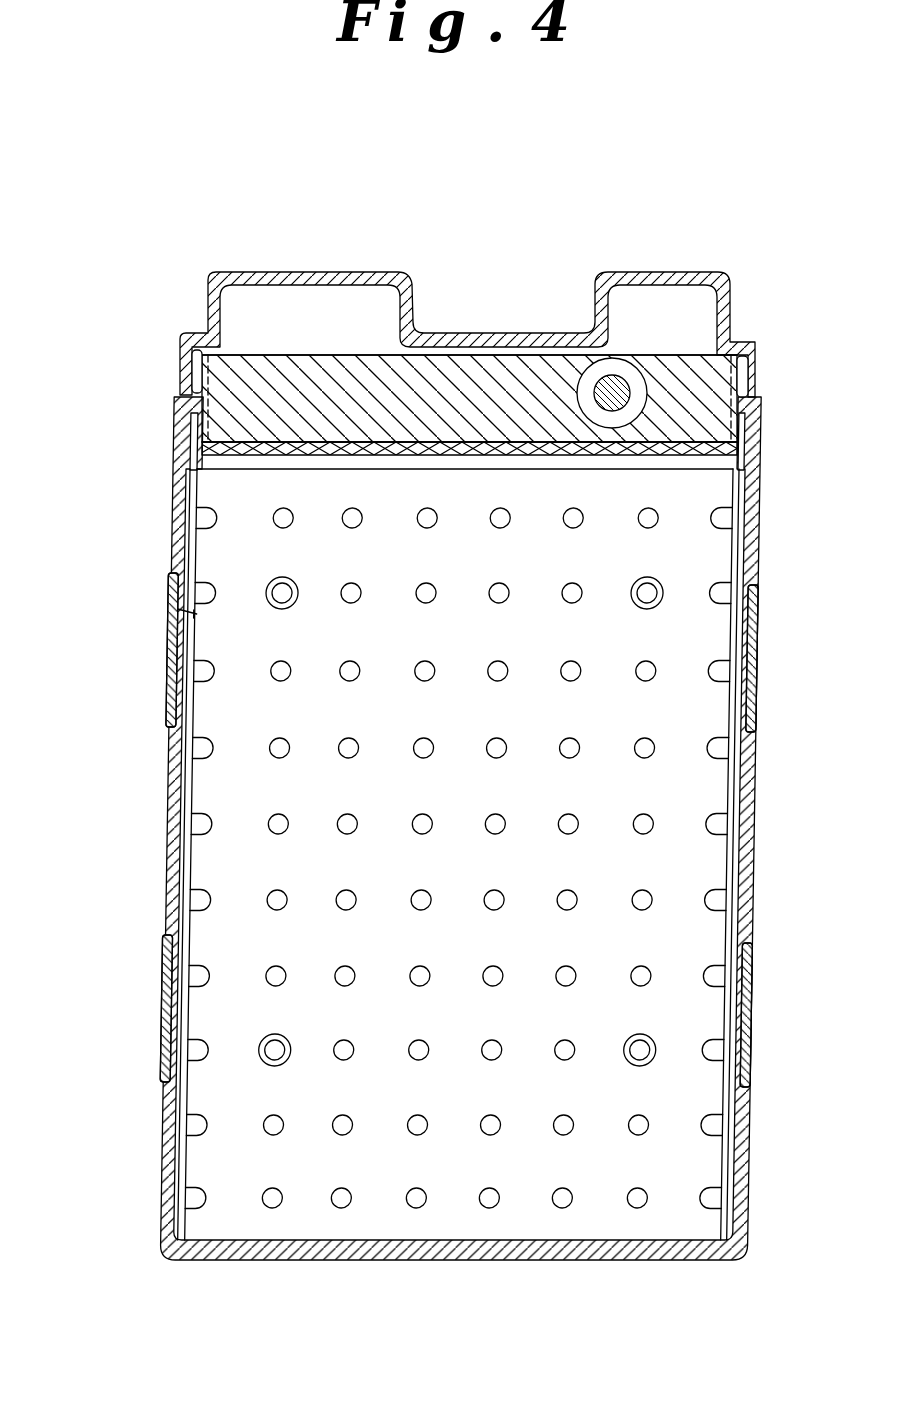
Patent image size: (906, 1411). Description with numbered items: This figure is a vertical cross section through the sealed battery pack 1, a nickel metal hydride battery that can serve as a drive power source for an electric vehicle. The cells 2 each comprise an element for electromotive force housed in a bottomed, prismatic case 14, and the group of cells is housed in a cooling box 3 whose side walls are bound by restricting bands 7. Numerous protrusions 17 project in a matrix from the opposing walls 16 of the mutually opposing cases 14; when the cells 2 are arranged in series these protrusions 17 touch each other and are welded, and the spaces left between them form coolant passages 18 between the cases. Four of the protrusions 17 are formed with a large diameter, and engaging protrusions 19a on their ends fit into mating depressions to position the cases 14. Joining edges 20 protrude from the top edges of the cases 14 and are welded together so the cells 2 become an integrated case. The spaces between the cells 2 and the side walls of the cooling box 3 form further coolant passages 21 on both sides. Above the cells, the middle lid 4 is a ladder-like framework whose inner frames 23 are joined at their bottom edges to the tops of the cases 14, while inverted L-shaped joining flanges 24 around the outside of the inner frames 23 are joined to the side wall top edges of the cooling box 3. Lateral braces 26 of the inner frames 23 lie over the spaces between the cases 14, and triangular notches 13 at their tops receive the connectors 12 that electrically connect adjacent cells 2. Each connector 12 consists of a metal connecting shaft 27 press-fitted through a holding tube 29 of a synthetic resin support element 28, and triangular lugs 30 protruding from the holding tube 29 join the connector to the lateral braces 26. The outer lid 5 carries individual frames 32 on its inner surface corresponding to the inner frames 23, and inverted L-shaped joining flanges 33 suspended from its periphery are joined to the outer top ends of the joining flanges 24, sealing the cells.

The sealed battery pack 1 is at (136, 1119).
The cells 2 is at (176, 608).
The cooling box 3 is at (174, 878).
The middle lid 4 is at (380, 356).
The outer lid 5 is at (297, 260).
The restricting bands 7 is at (172, 663).
The connectors 12 is at (617, 350).
The triangular notches 13 is at (742, 373).
The cases 14 is at (205, 717).
The opposing walls 16 is at (245, 545).
The protrusions 17 is at (650, 520).
The coolant passages 18 is at (480, 580).
The engaging protrusions 19a is at (645, 596).
The joining edges 20 is at (510, 440).
The coolant passages 21 is at (202, 826).
The inner frames 23 is at (198, 446).
The joining flanges 24 is at (182, 410).
The lateral braces 26 is at (343, 400).
The connecting shafts 27 is at (589, 372).
The support elements 28 is at (684, 345).
The holding tubes 29 is at (650, 375).
The triangular lugs 30 is at (673, 355).
The individual frames 32 is at (255, 305).
The joining flanges 33 is at (186, 374).